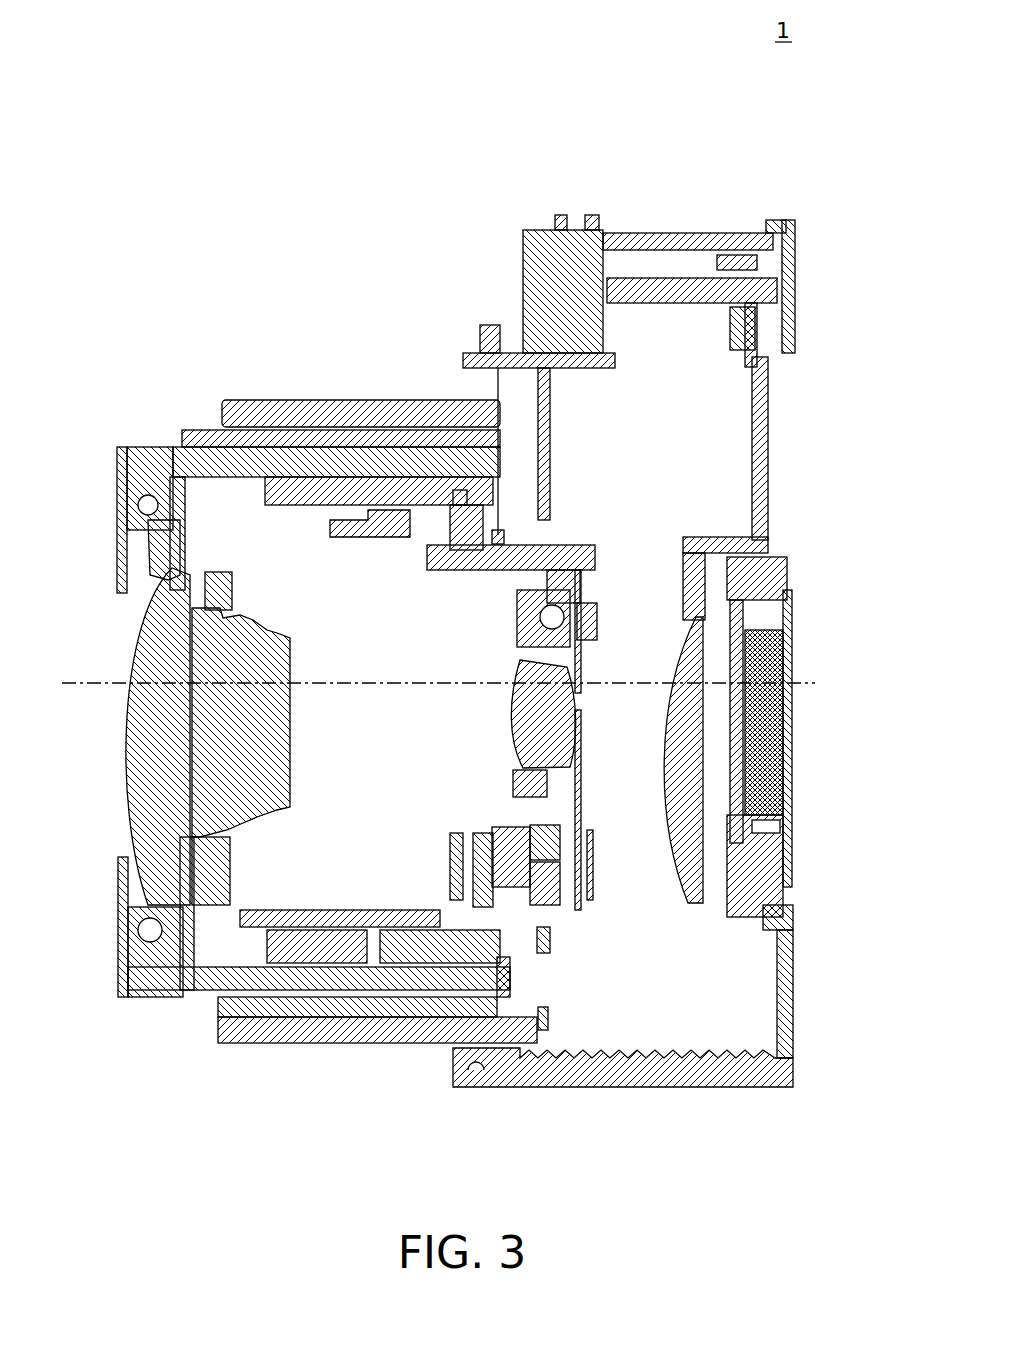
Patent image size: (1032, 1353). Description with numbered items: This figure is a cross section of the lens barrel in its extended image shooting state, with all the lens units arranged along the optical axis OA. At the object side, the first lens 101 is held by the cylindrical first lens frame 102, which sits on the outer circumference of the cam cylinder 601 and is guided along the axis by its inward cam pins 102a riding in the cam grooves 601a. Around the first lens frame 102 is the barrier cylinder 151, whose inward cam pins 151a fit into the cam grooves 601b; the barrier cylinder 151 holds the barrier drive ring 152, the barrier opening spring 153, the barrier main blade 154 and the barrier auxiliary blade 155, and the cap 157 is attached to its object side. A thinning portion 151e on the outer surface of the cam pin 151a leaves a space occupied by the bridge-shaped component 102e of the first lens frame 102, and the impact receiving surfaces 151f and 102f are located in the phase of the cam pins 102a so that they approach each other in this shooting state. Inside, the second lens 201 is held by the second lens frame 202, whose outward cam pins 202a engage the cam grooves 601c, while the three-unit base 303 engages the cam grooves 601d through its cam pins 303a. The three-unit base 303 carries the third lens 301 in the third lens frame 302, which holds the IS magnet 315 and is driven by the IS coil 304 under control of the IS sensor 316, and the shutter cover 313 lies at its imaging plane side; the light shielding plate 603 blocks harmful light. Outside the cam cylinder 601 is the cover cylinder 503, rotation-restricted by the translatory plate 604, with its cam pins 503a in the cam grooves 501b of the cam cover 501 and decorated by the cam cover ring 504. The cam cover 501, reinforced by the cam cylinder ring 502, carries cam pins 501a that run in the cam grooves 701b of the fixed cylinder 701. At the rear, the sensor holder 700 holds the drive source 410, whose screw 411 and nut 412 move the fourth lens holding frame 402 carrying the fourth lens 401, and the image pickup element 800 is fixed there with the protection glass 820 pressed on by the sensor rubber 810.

The first lens 101 is at (175, 905).
The first lens frame 102 is at (190, 990).
The cam pins 102a is at (412, 960).
The component having a bridge shape 102e is at (375, 470).
The impact receiving surface 102f is at (340, 995).
The barrier cylinder 151 is at (155, 470).
The cam pins 151a is at (410, 470).
The thinning portion 151e is at (400, 470).
The impact receiving surface 151f is at (333, 987).
The barrier drive ring 152 is at (137, 980).
The barrier opening spring 153 is at (133, 470).
The barrier main blade 154 is at (140, 498).
The barrier auxiliary blade 155 is at (118, 930).
The cap 157 is at (122, 455).
The second lens 201 is at (212, 990).
The second lens frame 202 is at (241, 1045).
The cam pins 202a is at (342, 975).
The third lens 301 is at (737, 722).
The third lens frame 302 is at (553, 720).
The three-unit base 303 is at (573, 900).
The cam pins 303a is at (360, 470).
The IS coil 304 is at (548, 877).
The shutter cover 313 is at (525, 797).
The IS magnet 315 is at (508, 838).
The IS sensor 316 is at (497, 850).
The fourth lens 401 is at (663, 630).
The fourth lens holding frame 402 is at (700, 537).
The drive source 410 is at (580, 248).
The screw 411 is at (667, 290).
The nut 412 is at (740, 262).
The cam cover 501 is at (292, 450).
The cam pins 501a is at (503, 1057).
The cam grooves 501b is at (498, 380).
The cam cylinder ring 502 is at (230, 430).
The cover cylinder 503 is at (268, 398).
The cam pins 503a is at (440, 402).
The cam cover ring 504 is at (190, 477).
The cam cylinder 601 is at (435, 965).
The cam grooves 601a is at (428, 985).
The cam grooves 601b is at (378, 500).
The cam grooves 601c is at (310, 1000).
The cam grooves 601d is at (437, 480).
The light shielding plate 603 is at (518, 398).
The translatory plate 604 is at (562, 240).
The sensor holder 700 is at (789, 272).
The fixed cylinder 701 is at (740, 1075).
The cam grooves 701b is at (468, 1066).
The image pickup element 800 is at (757, 847).
The sensor rubber 810 is at (767, 750).
The protection glass 820 is at (778, 930).
The optical axis OA is at (90, 700).